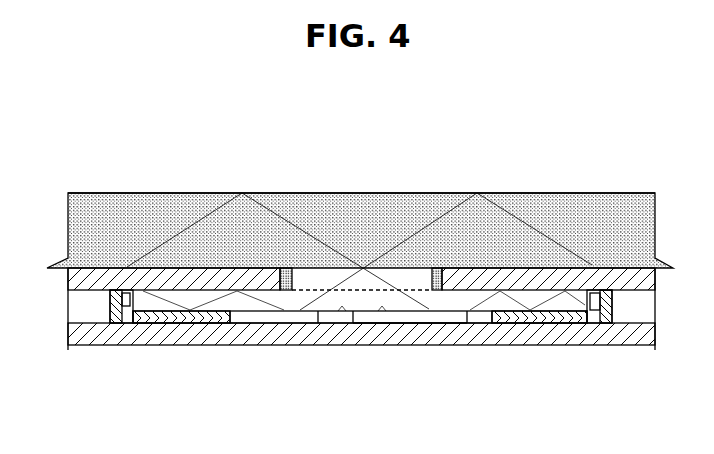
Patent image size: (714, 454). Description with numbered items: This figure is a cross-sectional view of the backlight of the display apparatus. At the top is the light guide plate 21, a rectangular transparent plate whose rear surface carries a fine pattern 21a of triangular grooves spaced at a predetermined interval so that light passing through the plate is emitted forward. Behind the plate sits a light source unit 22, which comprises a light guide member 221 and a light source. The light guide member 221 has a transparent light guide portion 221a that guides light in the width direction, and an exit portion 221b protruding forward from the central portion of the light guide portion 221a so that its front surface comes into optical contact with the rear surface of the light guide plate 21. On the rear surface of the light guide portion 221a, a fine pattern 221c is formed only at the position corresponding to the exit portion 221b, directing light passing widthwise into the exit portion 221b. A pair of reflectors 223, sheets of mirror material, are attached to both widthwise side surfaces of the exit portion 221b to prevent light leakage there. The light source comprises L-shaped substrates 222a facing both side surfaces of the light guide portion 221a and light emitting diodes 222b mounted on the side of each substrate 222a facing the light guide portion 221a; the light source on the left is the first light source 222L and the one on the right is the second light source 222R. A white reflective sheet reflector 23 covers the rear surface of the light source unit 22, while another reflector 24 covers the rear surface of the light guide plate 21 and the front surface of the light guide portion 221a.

The light guide plate 21 is at (546, 188).
The fine pattern 21a is at (185, 267).
The light source unit 22 is at (360, 356).
The reflector 23 is at (242, 346).
The reflector 24 is at (68, 290).
The light guide member 221 is at (405, 356).
The light guide portion 221a is at (482, 325).
The exit portion 221b is at (412, 278).
The fine pattern 221c is at (353, 325).
The first light source 222L is at (104, 309).
The second light source 222R is at (617, 365).
The substrate 222a is at (616, 300).
The light emitting diode 222b is at (603, 325).
The reflector 223 is at (286, 267).